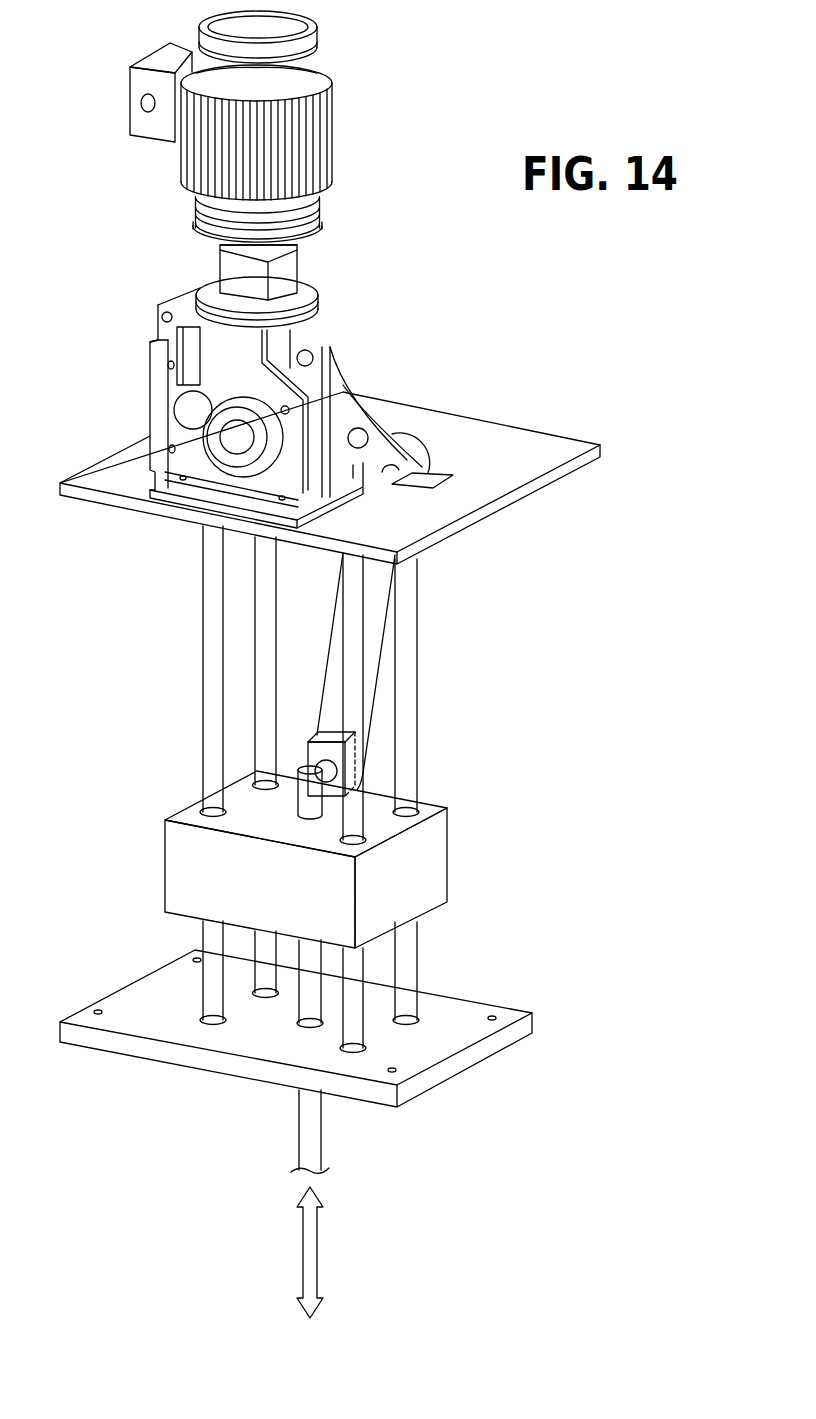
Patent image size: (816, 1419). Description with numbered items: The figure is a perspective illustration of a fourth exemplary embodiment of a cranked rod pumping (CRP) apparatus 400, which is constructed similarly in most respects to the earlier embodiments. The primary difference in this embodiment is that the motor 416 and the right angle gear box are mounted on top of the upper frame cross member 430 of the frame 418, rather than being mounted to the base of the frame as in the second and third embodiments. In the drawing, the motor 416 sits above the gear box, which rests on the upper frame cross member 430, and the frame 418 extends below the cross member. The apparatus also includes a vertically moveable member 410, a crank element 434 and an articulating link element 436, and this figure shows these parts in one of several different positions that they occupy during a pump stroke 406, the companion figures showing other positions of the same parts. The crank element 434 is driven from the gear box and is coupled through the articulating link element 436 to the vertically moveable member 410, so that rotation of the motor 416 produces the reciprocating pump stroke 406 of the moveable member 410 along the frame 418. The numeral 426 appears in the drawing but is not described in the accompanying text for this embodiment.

The CRP apparatus 400 is at (537, 311).
The motor 416 is at (326, 133).
The gearbox 426 is at (153, 375).
The crank element 434 is at (385, 438).
The upper frame cross member 430 is at (536, 440).
The frame 418 is at (210, 609).
The articulating link element 436 is at (378, 713).
The vertically moveable member 410 is at (197, 870).
The pump stroke 406 is at (310, 1250).